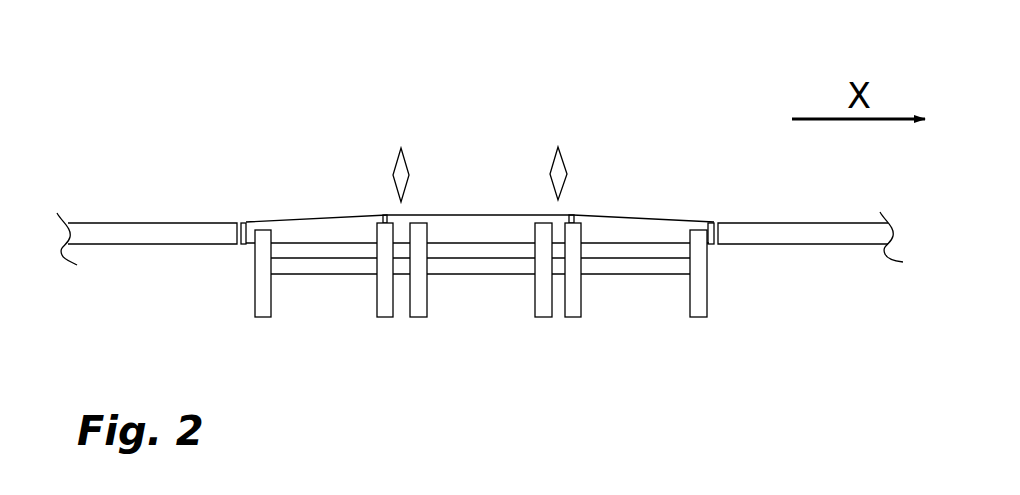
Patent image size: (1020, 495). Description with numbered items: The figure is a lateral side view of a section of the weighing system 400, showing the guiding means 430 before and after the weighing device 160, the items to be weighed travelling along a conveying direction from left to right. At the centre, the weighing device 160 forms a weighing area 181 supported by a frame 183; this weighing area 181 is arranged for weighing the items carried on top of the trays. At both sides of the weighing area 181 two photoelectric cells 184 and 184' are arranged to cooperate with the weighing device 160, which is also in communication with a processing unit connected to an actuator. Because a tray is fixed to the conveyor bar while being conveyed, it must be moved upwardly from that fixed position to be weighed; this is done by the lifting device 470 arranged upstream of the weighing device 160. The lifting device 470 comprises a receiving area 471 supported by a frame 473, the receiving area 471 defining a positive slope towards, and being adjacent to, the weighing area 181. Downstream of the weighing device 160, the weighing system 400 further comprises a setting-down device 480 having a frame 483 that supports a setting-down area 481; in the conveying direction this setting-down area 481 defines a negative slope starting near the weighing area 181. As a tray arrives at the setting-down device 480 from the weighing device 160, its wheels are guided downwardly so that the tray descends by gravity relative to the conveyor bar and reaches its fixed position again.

The weighing system 400 is at (493, 210).
The guiding means 430 is at (107, 233).
The lifting device 470 is at (286, 243).
The receiving area 471 is at (316, 219).
The frame 473 is at (255, 272).
The setting-down device 480 is at (691, 228).
The setting-down area 481 is at (617, 217).
The frame 483 is at (707, 265).
The weighing area 181 is at (442, 216).
The frame 183 is at (472, 274).
The photoelectric cell 184 is at (370, 128).
The photoelectric cell 184' is at (600, 124).
The weighing device 160 is at (511, 185).